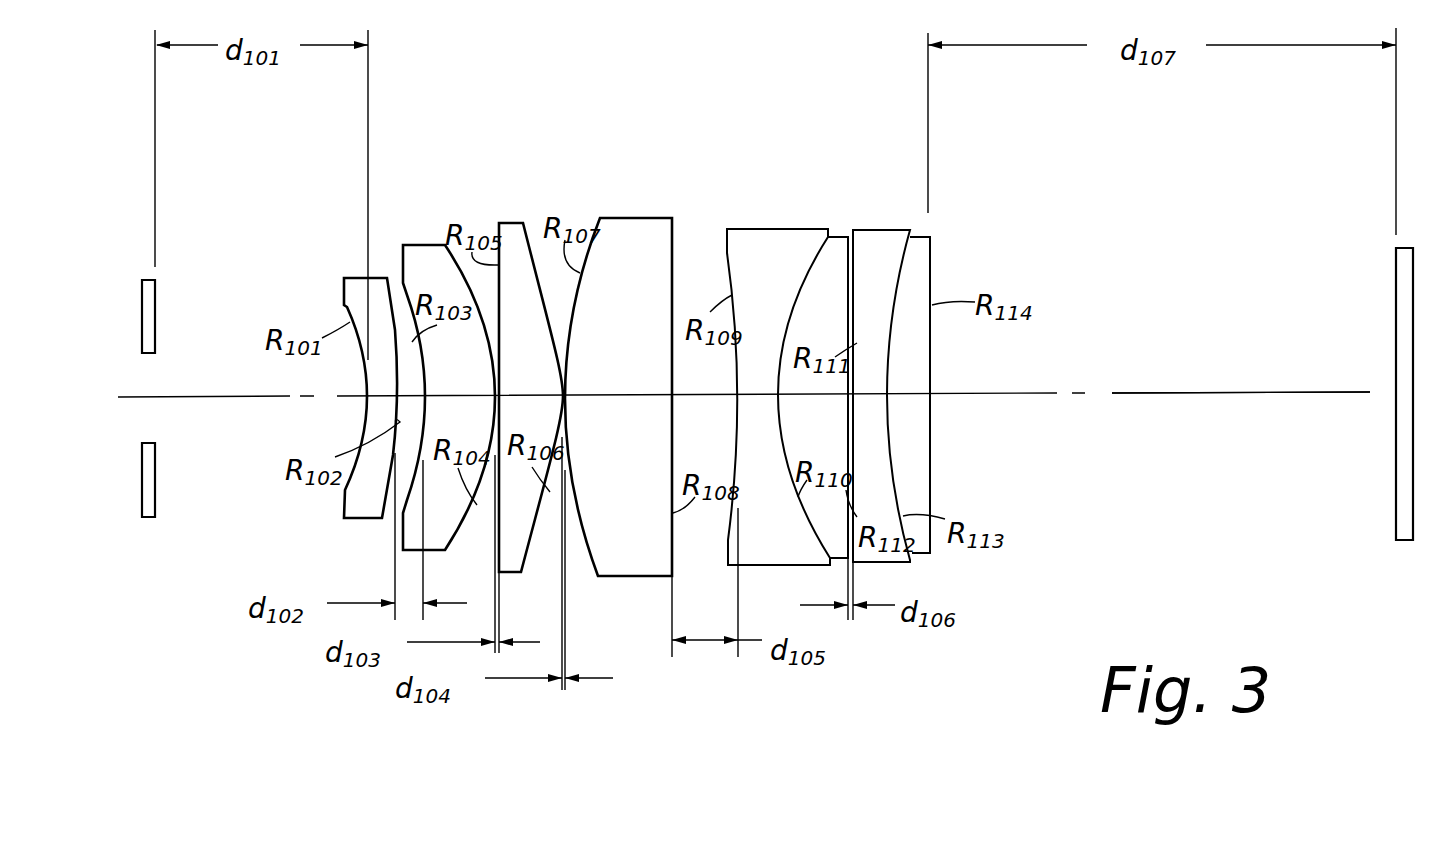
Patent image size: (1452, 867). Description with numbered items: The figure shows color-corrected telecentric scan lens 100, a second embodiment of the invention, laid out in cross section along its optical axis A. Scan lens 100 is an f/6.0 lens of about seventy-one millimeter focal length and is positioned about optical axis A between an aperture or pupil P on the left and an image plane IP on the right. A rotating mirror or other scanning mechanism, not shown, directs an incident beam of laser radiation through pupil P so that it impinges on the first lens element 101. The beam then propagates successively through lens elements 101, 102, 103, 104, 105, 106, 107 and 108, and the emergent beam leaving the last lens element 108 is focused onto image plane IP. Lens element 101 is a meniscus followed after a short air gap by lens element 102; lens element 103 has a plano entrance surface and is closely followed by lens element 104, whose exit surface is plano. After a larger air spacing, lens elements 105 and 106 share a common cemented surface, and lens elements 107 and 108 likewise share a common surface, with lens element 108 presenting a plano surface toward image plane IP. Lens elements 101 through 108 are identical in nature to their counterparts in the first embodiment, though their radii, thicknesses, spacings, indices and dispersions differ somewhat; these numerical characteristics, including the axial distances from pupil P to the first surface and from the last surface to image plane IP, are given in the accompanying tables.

The color-corrected telecentric scan lens 100 is at (735, 118).
The lens element 101 is at (356, 278).
The lens element 102 is at (425, 245).
The lens element 103 is at (512, 223).
The lens element 104 is at (622, 218).
The lens element 105 is at (745, 228).
The lens element 106 is at (840, 237).
The lens element 107 is at (882, 230).
The lens element 108 is at (928, 237).
The pupil P is at (157, 307).
The image plane IP is at (1396, 300).
The optical axis A is at (1265, 395).